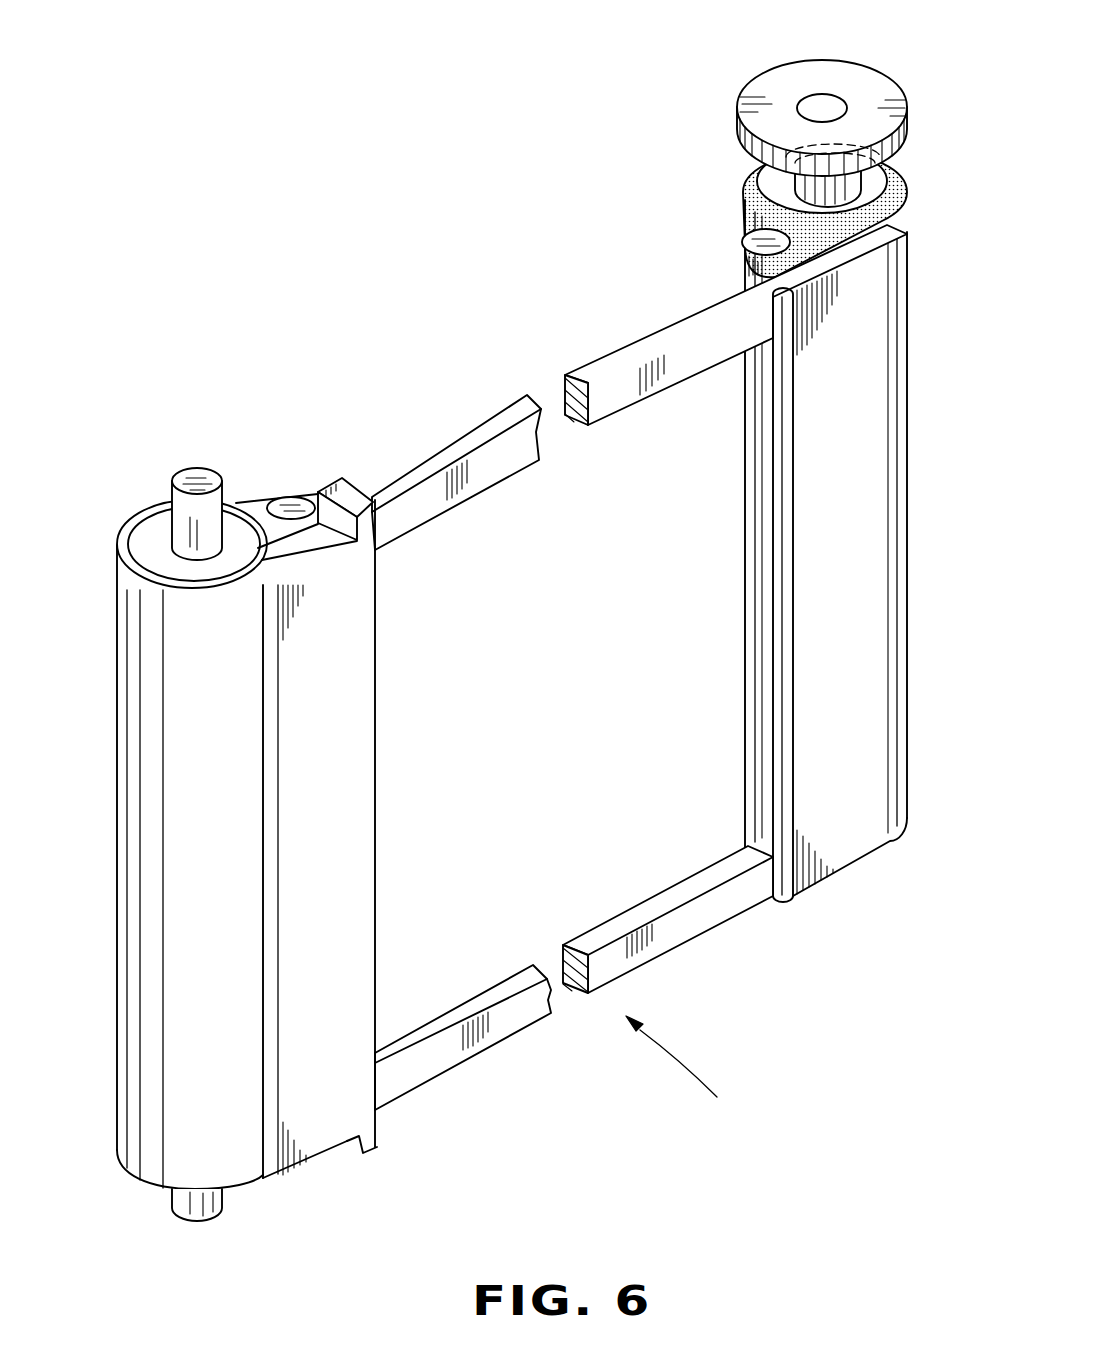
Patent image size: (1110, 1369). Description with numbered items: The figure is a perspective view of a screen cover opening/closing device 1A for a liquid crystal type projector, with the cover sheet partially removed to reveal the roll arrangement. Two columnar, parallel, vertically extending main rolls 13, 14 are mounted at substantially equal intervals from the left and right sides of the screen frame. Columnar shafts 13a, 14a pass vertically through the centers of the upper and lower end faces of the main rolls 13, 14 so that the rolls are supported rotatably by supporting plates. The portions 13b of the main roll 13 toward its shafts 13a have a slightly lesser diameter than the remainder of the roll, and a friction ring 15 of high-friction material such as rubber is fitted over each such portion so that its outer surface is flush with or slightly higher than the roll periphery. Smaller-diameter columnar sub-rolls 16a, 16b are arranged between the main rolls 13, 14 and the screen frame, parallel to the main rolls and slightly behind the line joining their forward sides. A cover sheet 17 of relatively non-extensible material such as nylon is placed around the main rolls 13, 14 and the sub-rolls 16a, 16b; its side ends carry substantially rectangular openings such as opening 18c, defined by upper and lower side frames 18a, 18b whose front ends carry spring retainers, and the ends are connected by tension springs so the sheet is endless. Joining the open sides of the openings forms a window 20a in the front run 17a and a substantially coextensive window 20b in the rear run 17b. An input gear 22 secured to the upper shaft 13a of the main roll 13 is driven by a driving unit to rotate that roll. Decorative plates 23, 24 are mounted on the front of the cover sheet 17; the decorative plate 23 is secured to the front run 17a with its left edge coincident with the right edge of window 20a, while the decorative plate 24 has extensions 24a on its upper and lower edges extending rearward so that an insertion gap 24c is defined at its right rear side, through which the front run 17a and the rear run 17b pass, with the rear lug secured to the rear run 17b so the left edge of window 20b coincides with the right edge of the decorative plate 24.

The screen cover opening/closing device 1A is at (692, 1068).
The main roll 13 is at (750, 145).
The shaft 13a is at (785, 195).
The portion of lesser diameter 13b is at (806, 202).
The main roll 14 is at (235, 520).
The shaft 14a is at (187, 470).
The friction ring 15 is at (748, 207).
The sub-roll 16a is at (742, 243).
The sub-roll 16b is at (292, 496).
The cover sheet 17 is at (787, 548).
The front run 17a is at (425, 1072).
The rear run 17b is at (437, 1025).
The upper side frame 18a is at (512, 408).
The lower side frame 18b is at (585, 921).
The rectangular opening 18c is at (750, 578).
The window 20a is at (731, 874).
The window 20b is at (712, 860).
The input gear 22 is at (835, 70).
The decorative plate 23 is at (815, 470).
The decorative plate 24 is at (355, 812).
The extension 24a is at (350, 497).
The insertion gap 24c is at (320, 490).